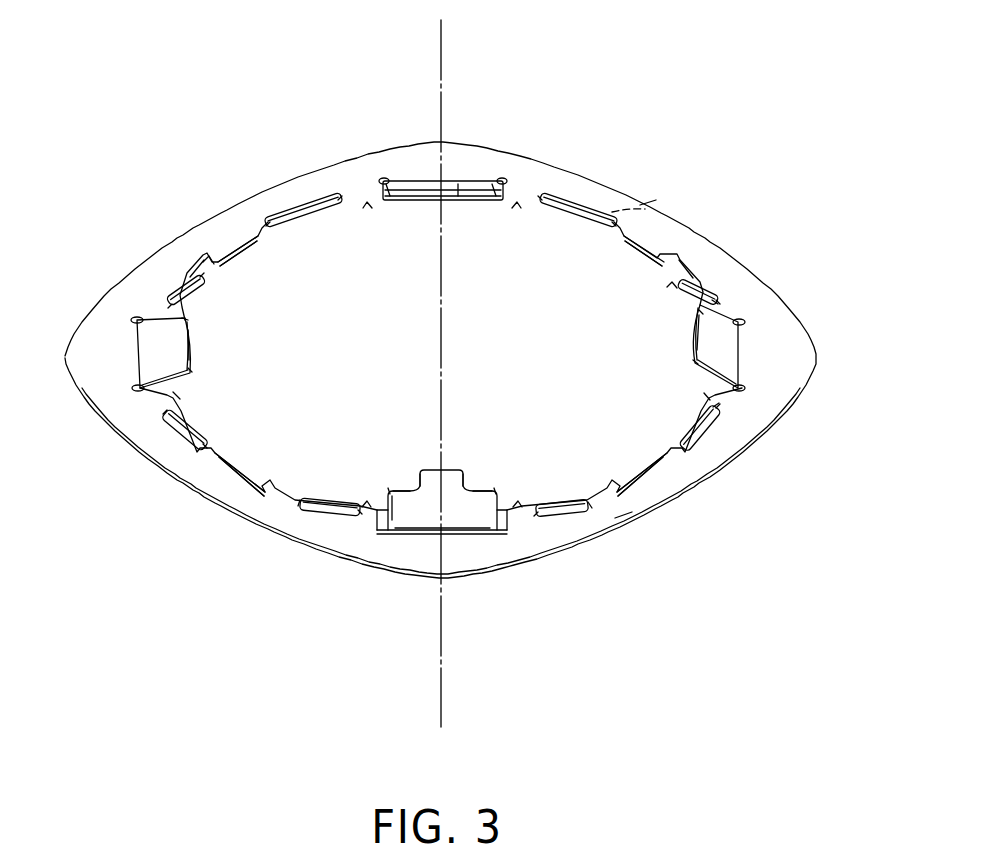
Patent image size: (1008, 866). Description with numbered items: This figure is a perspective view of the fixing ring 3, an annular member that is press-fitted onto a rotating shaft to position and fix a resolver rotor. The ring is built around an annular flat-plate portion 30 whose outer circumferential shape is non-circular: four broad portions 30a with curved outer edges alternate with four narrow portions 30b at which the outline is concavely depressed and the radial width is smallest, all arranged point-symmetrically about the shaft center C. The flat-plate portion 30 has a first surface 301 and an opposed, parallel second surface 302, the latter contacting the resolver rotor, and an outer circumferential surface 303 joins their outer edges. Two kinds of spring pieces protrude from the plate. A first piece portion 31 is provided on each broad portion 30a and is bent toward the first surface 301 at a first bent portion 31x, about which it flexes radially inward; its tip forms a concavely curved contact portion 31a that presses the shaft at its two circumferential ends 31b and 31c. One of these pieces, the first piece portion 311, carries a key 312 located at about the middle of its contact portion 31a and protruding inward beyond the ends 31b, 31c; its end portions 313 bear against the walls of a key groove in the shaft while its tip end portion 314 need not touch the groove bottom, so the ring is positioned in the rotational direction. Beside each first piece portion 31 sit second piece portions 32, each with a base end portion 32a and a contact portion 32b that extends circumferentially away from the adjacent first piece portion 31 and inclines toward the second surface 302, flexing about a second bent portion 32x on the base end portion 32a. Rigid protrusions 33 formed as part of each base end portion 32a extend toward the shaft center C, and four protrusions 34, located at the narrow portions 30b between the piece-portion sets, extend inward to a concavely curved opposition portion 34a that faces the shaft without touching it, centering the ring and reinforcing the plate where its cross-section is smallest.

The fixing member (fixing ring) 3 is at (621, 200).
The flat-plate portion 30 is at (467, 360).
The broad portion 30a is at (68, 325).
The narrow portion 30b is at (207, 216).
The first surface 301 is at (648, 202).
The second surface 302 is at (653, 208).
The outer circumferential surface 303 is at (623, 523).
The first piece portion 31 is at (451, 360).
The first piece portion (with key) 311 is at (442, 502).
The key (protrusion) 312 is at (438, 487).
The end portion of key 313 is at (418, 497).
The tip end portion of key 314 is at (445, 469).
The contact portion 31a is at (458, 199).
The end of contact portion 31b is at (495, 200).
The end of contact portion 31c is at (388, 200).
The first bent portion 31x is at (417, 174).
The second piece portion 32 is at (178, 280).
The base end portion 32a is at (160, 303).
The contact portion 32b is at (310, 212).
The second bent portion 32x is at (182, 277).
The protrusion 33 is at (215, 290).
The protrusion 34 is at (441, 317).
The opposition portion 34a is at (263, 253).
The shaft center C is at (447, 33).